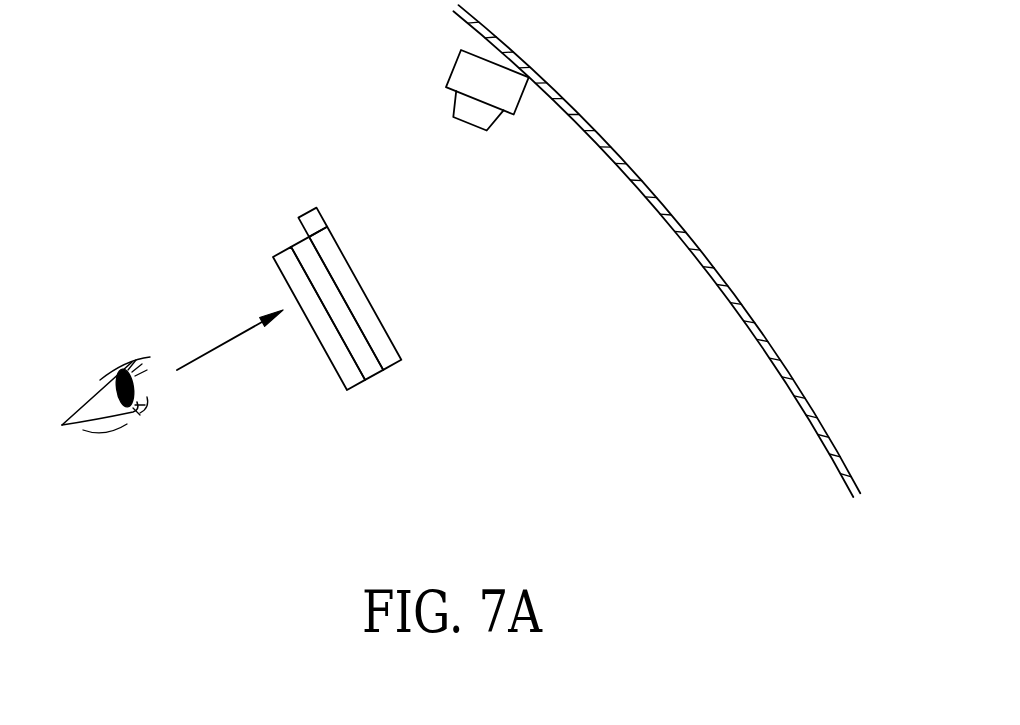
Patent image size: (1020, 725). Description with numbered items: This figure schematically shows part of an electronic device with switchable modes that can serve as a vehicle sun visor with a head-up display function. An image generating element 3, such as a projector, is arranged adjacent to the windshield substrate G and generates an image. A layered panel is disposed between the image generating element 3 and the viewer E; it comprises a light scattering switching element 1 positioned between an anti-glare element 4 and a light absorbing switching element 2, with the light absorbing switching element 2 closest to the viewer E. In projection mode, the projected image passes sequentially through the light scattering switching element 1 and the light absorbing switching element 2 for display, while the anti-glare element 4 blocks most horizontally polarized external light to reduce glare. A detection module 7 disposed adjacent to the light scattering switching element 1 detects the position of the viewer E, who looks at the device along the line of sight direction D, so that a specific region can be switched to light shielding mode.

The light scattering switching element 1 is at (372, 373).
The light absorbing switching element 2 is at (353, 382).
The anti-glare element 4 is at (392, 363).
The detection module 7 is at (310, 218).
The image generating element 3 is at (457, 70).
The windshield substrate G is at (742, 305).
The viewer E is at (100, 387).
The line of sight direction D is at (207, 348).